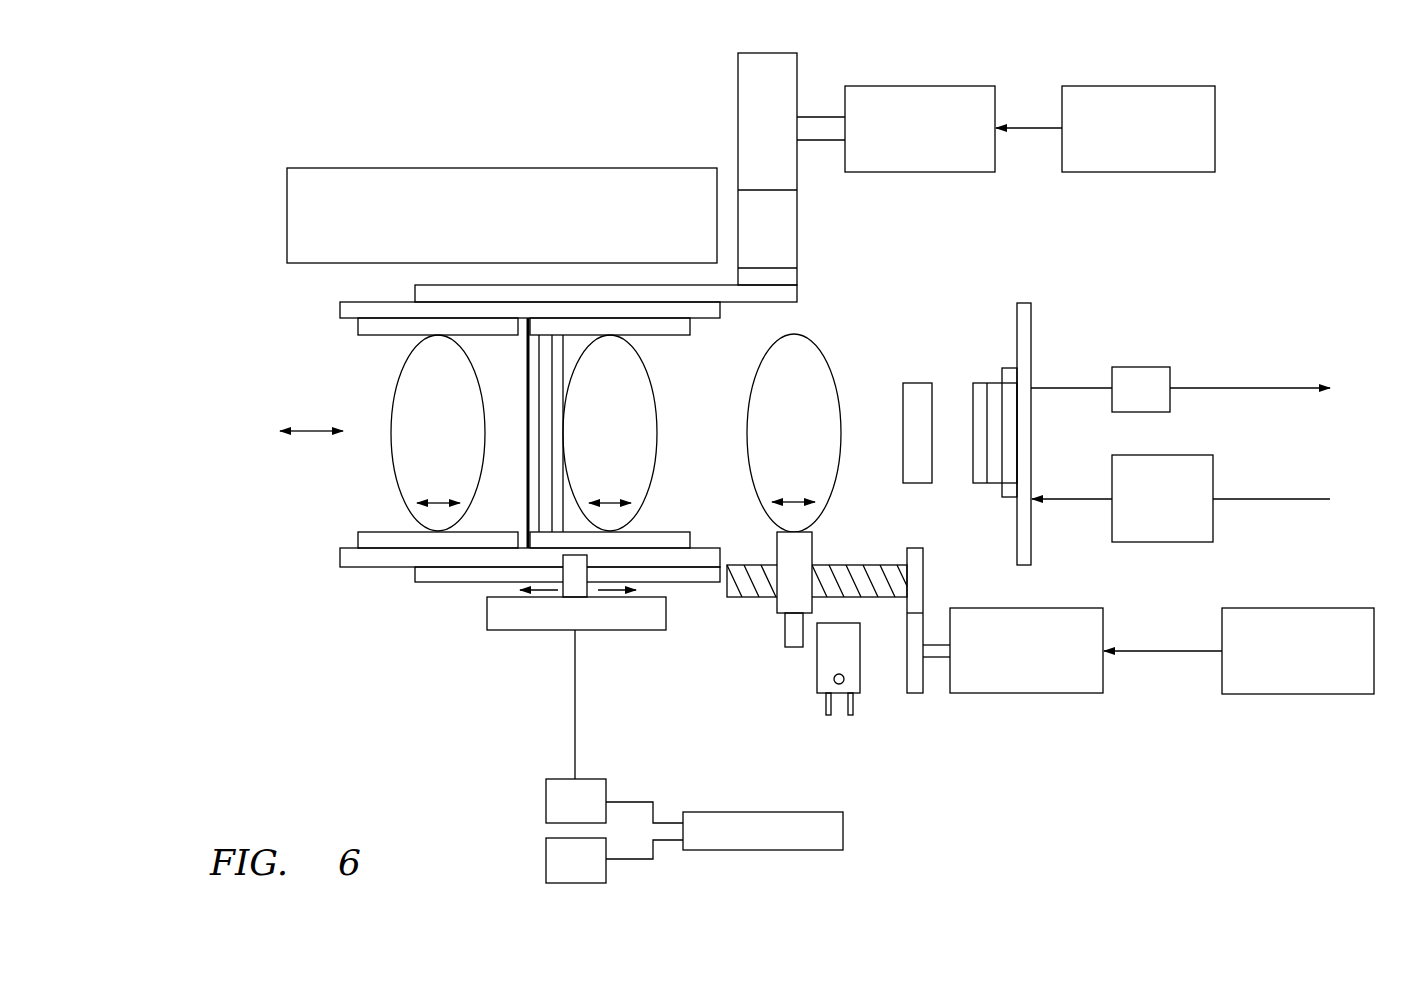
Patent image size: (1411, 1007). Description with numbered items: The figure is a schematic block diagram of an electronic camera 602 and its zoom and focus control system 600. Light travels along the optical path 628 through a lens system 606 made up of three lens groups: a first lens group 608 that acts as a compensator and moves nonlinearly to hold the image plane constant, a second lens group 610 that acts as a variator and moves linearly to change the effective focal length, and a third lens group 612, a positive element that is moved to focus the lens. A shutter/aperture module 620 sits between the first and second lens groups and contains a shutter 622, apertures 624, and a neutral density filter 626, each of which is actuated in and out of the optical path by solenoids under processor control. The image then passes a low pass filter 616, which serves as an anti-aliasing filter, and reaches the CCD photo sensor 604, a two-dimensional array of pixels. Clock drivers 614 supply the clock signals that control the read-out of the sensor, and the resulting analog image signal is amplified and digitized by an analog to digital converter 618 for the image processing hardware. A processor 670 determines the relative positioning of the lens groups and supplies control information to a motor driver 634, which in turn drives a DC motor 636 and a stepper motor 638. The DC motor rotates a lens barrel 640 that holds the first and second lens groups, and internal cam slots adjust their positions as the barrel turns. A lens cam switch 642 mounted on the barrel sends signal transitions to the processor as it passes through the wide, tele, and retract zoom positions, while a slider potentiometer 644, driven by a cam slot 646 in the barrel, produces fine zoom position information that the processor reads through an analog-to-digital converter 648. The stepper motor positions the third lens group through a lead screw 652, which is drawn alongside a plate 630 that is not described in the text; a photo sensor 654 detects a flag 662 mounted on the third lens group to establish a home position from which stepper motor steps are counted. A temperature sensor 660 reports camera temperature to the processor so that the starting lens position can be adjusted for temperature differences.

The zoom and focus control system 600 is at (178, 239).
The electronic camera 602 is at (268, 489).
The CCD photo sensor 604 is at (1000, 417).
The lens system 606 is at (761, 335).
The first lens group 608 is at (393, 468).
The second lens group 610 is at (657, 452).
The third lens group 612 is at (828, 355).
The clock drivers 614 is at (1112, 477).
The low pass filter 616 is at (920, 383).
The analog to digital converter 618 is at (1143, 367).
The shutter/aperture module 620 is at (527, 362).
The shutter 622 is at (536, 427).
The apertures 624 is at (548, 453).
The neutral density filter 626 is at (567, 352).
The optical path 628 is at (311, 430).
The mounting plate 630 is at (923, 565).
The motor driver 634 is at (1215, 128).
The DC motor 636 is at (868, 172).
The stepper motor 638 is at (1062, 608).
The lens barrel 640 is at (340, 307).
The lens cam switch 642 is at (667, 168).
The slider potentiometer 644 is at (537, 632).
The cam slot 646 is at (577, 575).
The analog-to-digital converter 648 is at (546, 806).
The lead screw 652 is at (840, 565).
The photo sensor 654 is at (817, 670).
The temperature sensor 660 is at (546, 861).
The flag 662 is at (785, 635).
The processor 670 is at (843, 828).